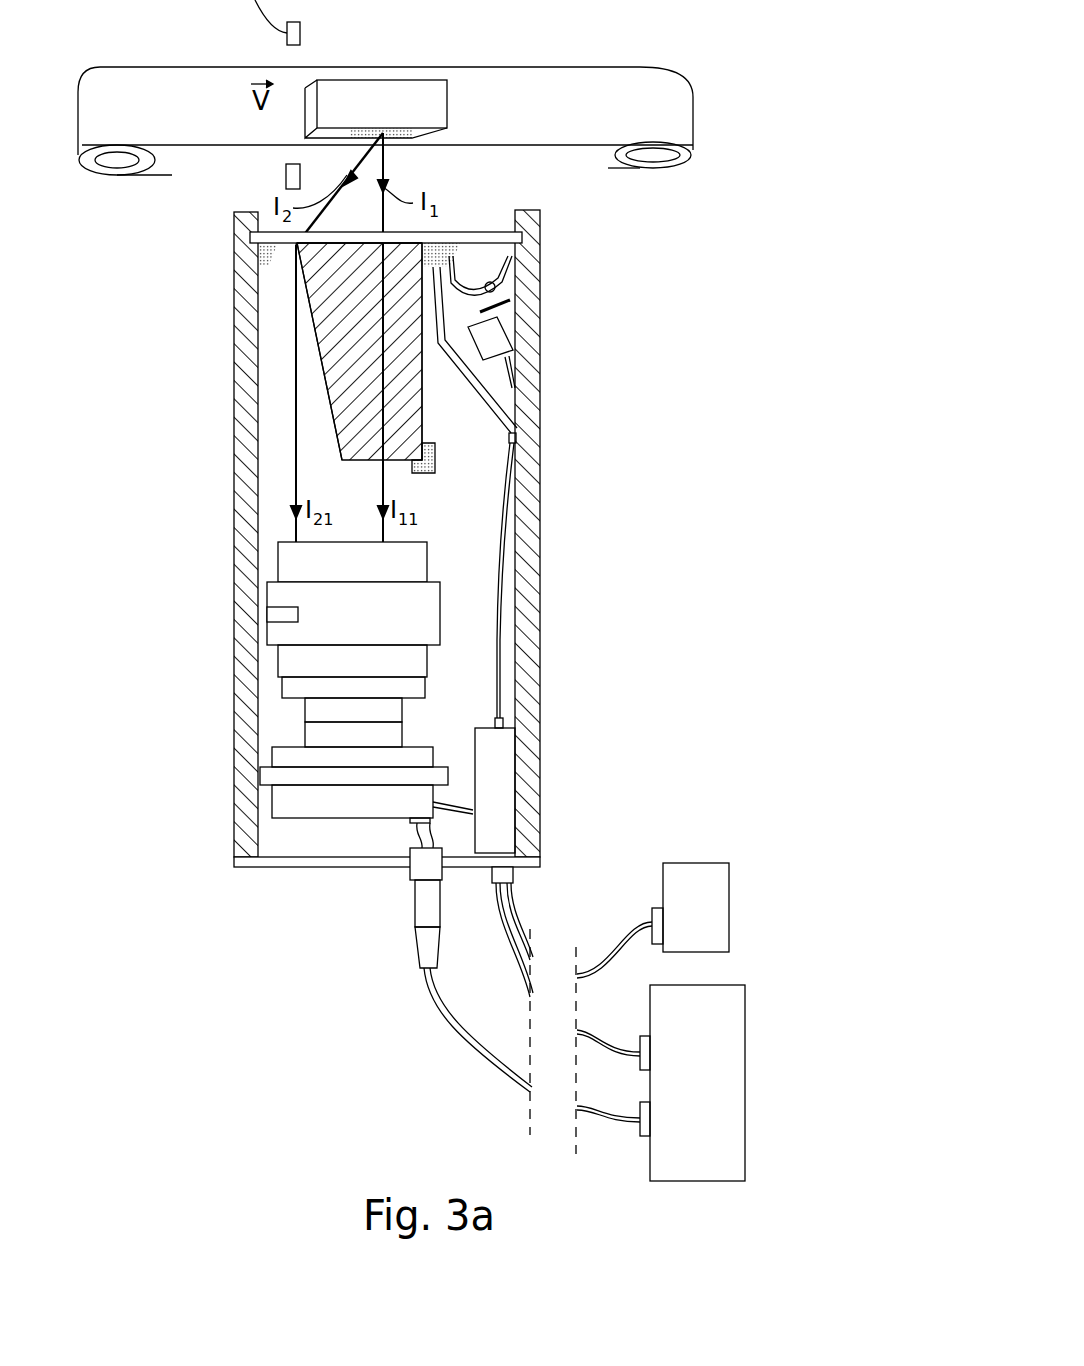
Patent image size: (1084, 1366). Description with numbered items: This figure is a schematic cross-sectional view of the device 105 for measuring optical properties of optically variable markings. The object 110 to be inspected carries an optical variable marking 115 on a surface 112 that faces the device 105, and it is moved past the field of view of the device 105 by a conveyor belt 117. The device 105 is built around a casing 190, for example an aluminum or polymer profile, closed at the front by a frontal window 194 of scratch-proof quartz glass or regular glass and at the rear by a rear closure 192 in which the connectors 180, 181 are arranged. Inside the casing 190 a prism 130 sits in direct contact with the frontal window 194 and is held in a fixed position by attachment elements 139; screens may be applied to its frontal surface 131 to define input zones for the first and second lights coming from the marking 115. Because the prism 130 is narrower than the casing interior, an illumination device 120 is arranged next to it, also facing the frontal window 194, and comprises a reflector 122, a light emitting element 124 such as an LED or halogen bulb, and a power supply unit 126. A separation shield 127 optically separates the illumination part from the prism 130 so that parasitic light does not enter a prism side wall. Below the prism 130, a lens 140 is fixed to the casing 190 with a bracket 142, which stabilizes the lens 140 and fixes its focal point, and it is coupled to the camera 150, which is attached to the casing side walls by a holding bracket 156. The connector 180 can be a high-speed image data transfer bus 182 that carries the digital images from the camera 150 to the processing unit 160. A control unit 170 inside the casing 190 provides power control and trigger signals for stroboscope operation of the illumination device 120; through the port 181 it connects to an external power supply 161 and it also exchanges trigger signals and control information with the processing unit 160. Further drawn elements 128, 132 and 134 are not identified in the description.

The device 105 is at (222, 450).
The object 110 is at (430, 100).
The surface 112 is at (430, 135).
The optical variable marking 115 is at (373, 132).
The conveyor belt 117 is at (615, 118).
The illumination device 120 is at (595, 318).
The reflector 122 is at (517, 252).
The light emitting element 124 is at (515, 298).
The power supply unit 126 is at (498, 338).
The separation shield 127 is at (530, 355).
The cable 128 is at (503, 533).
The prism 130 is at (352, 440).
The frontal surface 131 is at (317, 253).
The prism body 132 is at (337, 360).
The optical block 134 is at (407, 410).
The attachment elements 139 is at (255, 246).
The lens 140 is at (432, 598).
The bracket 142 is at (270, 612).
The camera 150 is at (290, 800).
The holding bracket 156 is at (275, 773).
The processing unit 160 is at (706, 1150).
The external power supply 161 is at (695, 882).
The control unit 170 is at (500, 758).
The connector 180 is at (425, 870).
The connector 181 is at (505, 875).
The high-speed image data transfer bus 182 is at (478, 1062).
The casing 190 is at (528, 620).
The rear closure 192 is at (270, 868).
The frontal window 194 is at (478, 240).